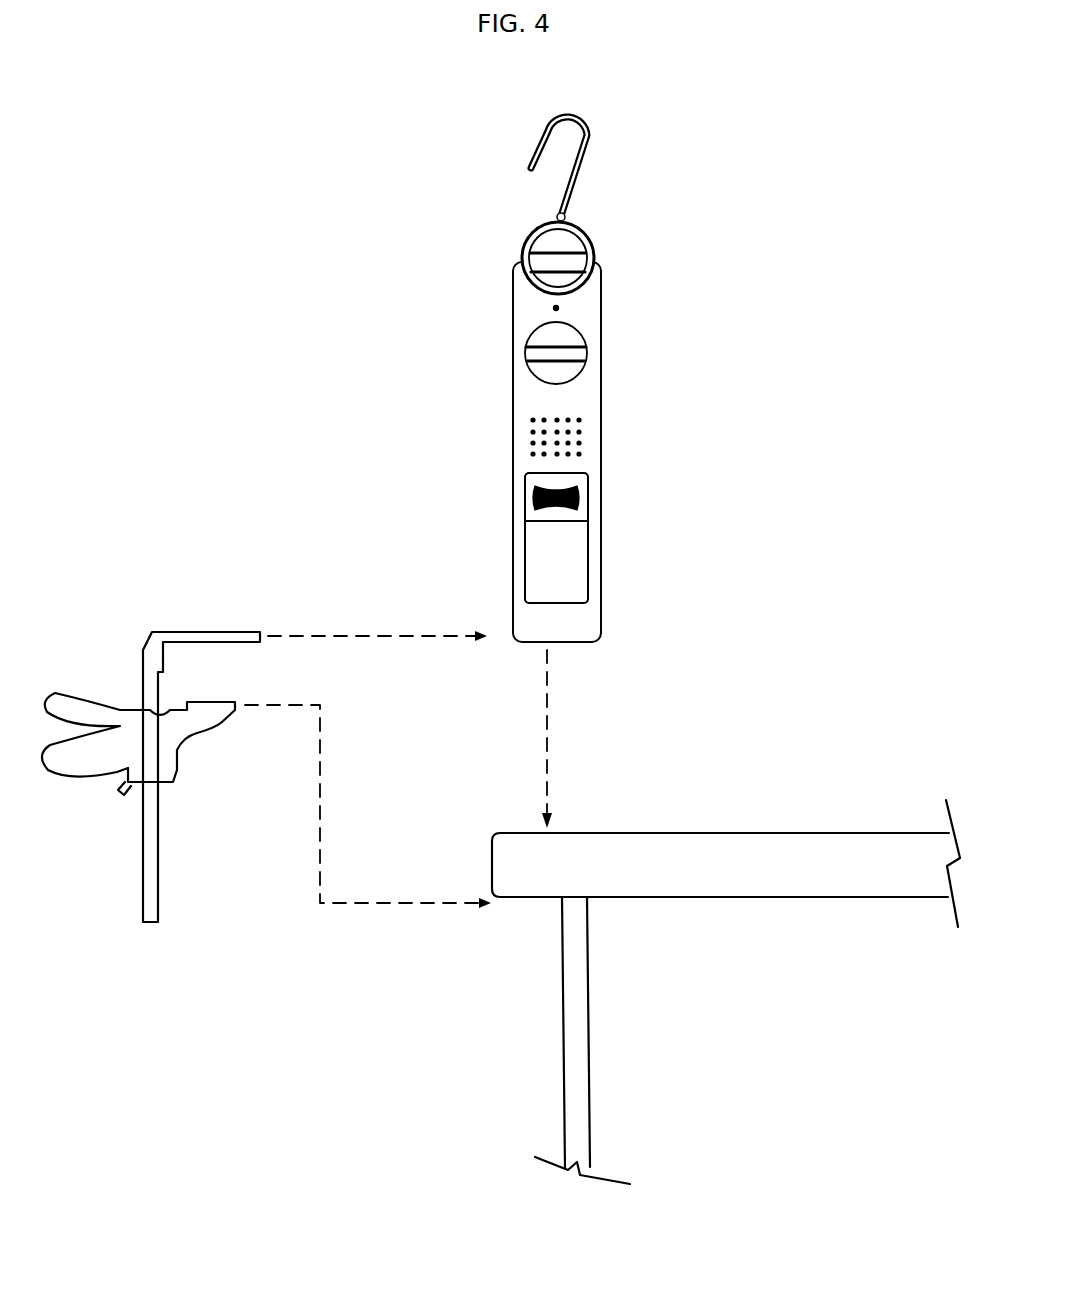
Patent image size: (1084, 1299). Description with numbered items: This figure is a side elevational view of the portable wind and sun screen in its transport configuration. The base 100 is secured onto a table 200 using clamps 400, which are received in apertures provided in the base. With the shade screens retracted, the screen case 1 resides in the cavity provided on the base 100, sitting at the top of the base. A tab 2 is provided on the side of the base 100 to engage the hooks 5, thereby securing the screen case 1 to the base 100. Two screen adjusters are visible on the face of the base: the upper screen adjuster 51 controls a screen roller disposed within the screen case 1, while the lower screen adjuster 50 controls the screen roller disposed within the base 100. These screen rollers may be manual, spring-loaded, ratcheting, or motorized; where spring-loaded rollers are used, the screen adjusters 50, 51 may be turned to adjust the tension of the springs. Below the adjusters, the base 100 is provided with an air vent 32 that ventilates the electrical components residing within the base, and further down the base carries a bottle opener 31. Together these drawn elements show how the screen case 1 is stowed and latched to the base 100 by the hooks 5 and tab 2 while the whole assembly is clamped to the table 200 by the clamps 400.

The base 100 is at (640, 306).
The hooks 5 is at (578, 113).
The screen case 1 is at (528, 225).
The upper screen adjuster 51 is at (537, 258).
The tab 2 is at (553, 307).
The lower screen adjuster 50 is at (538, 353).
The air vent 32 is at (578, 445).
The bottle opener 31 is at (552, 508).
The clamps 400 is at (153, 632).
The table 200 is at (808, 812).